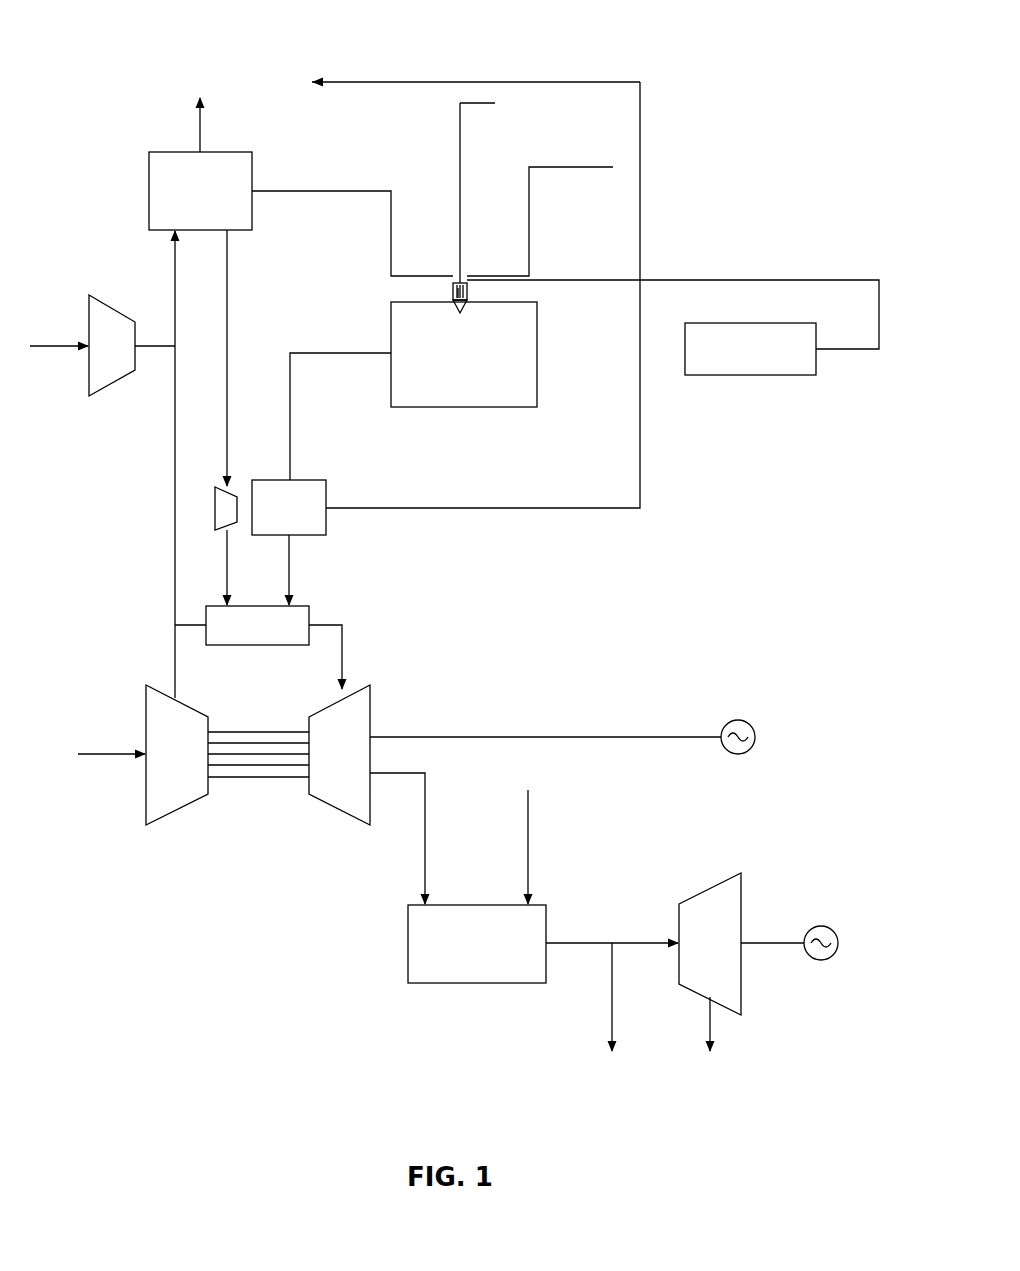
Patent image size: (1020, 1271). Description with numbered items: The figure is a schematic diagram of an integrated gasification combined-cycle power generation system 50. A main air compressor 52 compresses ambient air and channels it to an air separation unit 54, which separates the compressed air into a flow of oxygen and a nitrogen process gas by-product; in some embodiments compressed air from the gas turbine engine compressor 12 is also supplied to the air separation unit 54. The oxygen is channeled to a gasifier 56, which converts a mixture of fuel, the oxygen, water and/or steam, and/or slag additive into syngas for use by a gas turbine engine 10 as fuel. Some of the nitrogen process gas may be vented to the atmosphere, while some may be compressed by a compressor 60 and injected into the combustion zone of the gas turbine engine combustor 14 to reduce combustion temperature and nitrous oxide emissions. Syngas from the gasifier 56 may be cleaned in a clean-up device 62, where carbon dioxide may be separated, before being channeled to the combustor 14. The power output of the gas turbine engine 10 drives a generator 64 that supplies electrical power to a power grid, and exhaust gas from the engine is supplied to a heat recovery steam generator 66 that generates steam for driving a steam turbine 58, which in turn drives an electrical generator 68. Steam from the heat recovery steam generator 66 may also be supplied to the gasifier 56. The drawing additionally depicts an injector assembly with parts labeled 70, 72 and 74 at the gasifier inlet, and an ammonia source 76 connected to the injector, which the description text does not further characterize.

The integrated gasification combined-cycle power generation system 50 is at (134, 33).
The gas turbine engine 10 is at (155, 672).
The gas turbine engine compressor 12 is at (190, 708).
The gas turbine engine combustor 14 is at (243, 637).
The main air compressor 52 is at (112, 308).
The air separation unit 54 is at (186, 203).
The gasifier 56 is at (537, 355).
The steam turbine 58 is at (712, 890).
The compressor 60 is at (225, 484).
The clean-up device 62 is at (326, 523).
The generator 64 is at (745, 721).
The heat recovery steam generator 66 is at (463, 956).
The electrical generator 68 is at (828, 926).
The fuel injector 70 is at (470, 292).
The injector nozzle tip 72 is at (455, 313).
The steam passage 74 is at (462, 308).
The ammonia source 76 is at (752, 375).